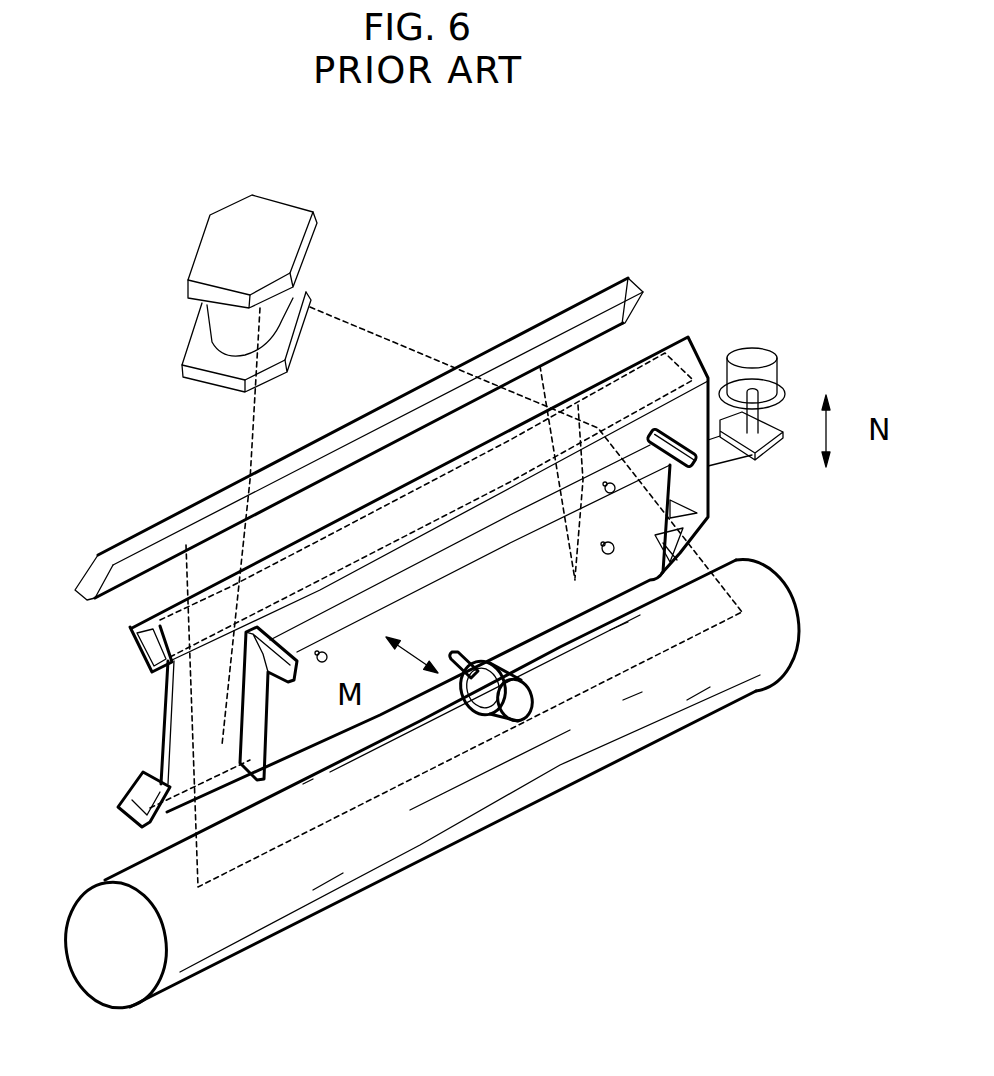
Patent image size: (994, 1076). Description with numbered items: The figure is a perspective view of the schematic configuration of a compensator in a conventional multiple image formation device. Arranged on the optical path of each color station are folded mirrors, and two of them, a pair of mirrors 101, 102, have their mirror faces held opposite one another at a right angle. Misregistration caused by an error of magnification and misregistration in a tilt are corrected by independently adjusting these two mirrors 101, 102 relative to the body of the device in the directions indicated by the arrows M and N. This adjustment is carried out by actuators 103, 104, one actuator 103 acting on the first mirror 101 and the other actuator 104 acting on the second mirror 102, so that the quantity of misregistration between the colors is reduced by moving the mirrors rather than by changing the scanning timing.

The folded mirror 101 is at (137, 650).
The folded mirror 102 is at (147, 773).
The actuator 103 is at (520, 717).
The actuator 104 is at (755, 345).